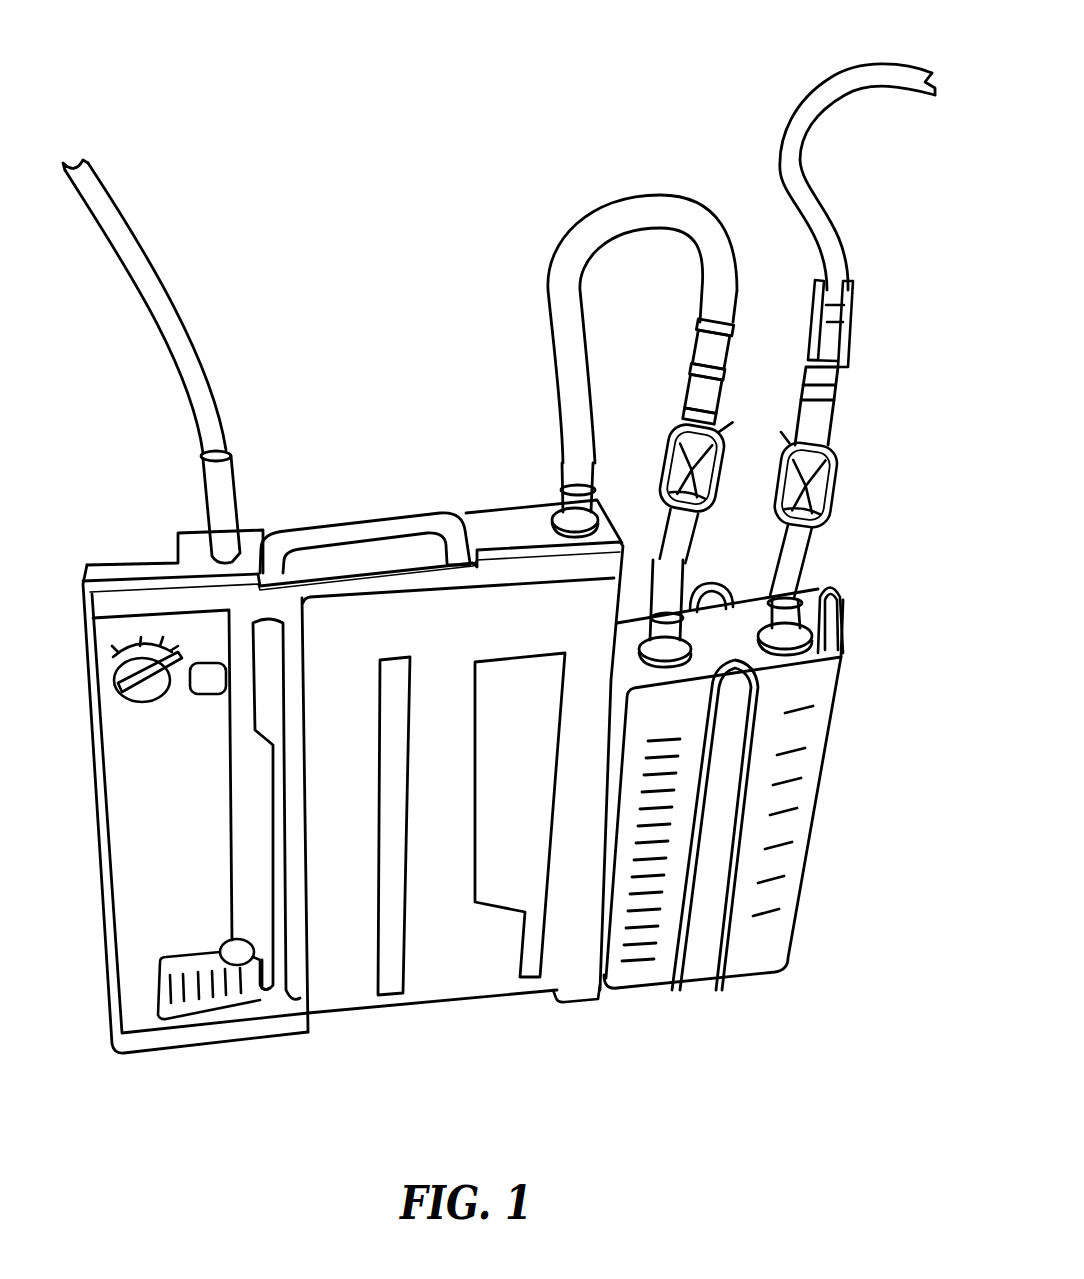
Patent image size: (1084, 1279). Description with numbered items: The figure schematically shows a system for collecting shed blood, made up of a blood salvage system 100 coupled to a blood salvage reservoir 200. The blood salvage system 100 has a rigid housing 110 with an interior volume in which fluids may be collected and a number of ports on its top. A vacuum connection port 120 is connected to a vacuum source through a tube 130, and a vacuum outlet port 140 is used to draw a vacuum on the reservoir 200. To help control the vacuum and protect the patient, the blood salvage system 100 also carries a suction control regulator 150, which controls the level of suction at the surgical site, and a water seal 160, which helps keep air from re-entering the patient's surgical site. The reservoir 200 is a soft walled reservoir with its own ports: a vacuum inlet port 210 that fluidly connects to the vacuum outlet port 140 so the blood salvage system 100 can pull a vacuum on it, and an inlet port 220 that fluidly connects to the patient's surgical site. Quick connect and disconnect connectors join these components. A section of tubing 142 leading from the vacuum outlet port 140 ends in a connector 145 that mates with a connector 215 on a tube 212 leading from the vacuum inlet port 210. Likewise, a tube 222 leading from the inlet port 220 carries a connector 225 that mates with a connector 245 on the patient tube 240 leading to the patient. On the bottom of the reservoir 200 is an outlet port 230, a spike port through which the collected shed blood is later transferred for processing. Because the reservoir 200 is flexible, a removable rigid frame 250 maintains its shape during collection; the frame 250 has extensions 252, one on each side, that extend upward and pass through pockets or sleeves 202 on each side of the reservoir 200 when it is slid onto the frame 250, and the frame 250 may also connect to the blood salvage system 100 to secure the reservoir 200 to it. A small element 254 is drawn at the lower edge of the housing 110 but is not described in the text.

The drainage system 100 is at (172, 1046).
The housing panel 110 is at (178, 868).
The tube connector 120 is at (227, 480).
The patient tube 130 is at (183, 352).
The outlet connector 140 is at (568, 500).
The drainage tube 142 is at (635, 215).
The tube connector 145 is at (707, 358).
The pressure gauge 150 is at (150, 683).
The clip bracket 160 is at (207, 985).
The collection container 200 is at (780, 858).
The container wall 202 is at (740, 940).
The inlet port 210 is at (667, 643).
The tube clamp 212 is at (693, 453).
The tube connector 215 is at (700, 388).
The outlet port 220 is at (788, 622).
The tube clamp 222 is at (820, 523).
The tube connector 225 is at (825, 387).
The container bottom 230 is at (700, 987).
The drain tube 240 is at (867, 70).
The luer connector 245 is at (830, 340).
The graduation marks 250 is at (740, 820).
The hanger loops 252 is at (816, 595).
The latch tab 254 is at (562, 1000).